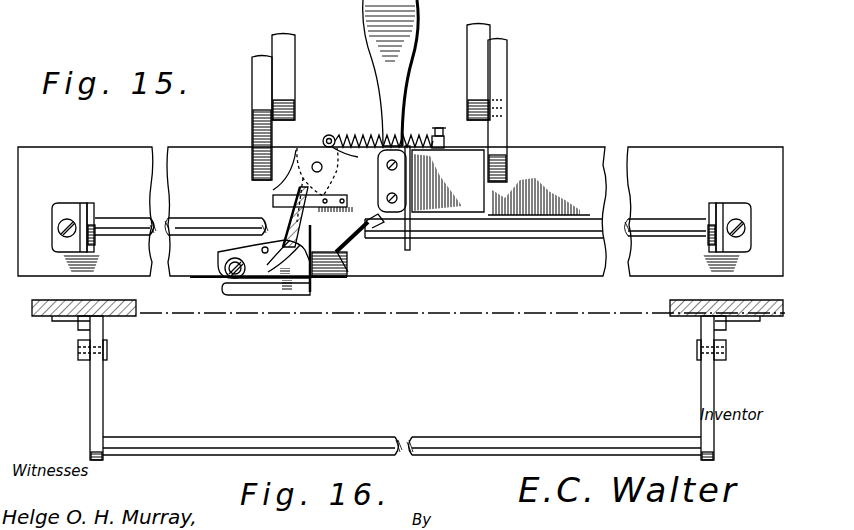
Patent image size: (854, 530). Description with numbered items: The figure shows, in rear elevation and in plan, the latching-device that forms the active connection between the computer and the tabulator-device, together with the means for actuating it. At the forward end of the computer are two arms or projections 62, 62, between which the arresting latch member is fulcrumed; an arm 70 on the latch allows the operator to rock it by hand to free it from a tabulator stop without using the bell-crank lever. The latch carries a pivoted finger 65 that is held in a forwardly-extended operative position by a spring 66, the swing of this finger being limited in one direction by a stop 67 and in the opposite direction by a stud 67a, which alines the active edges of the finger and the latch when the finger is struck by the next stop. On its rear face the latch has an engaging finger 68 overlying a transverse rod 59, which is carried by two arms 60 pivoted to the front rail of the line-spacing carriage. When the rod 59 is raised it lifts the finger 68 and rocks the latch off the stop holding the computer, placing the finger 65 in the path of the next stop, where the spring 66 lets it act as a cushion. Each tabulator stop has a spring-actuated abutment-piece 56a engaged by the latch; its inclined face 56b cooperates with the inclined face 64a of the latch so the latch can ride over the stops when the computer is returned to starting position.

In FIG. 15, the spring-actuated abutment-piece 56a is at (268, 269).
In FIG. 15, the inclined face 56b is at (267, 265).
In FIG. 15, the transverse rod 59 is at (510, 228).
In FIG. 16, the transverse rod 59 is at (248, 440).
In FIG. 15, the arms 60 is at (93, 210).
In FIG. 16, the arms 60 is at (104, 390).
In FIG. 15, the arms or projections 62 is at (252, 124).
In FIG. 15, the inclined face 64a is at (348, 272).
In FIG. 15, the pivoted finger 65 is at (248, 245).
In FIG. 15, the spring 66 is at (360, 132).
In FIG. 15, the stop 67 is at (250, 203).
In FIG. 15, the stud 67a is at (345, 250).
In FIG. 15, the engaging finger 68 is at (410, 252).
In FIG. 15, the arm 70 is at (370, 35).